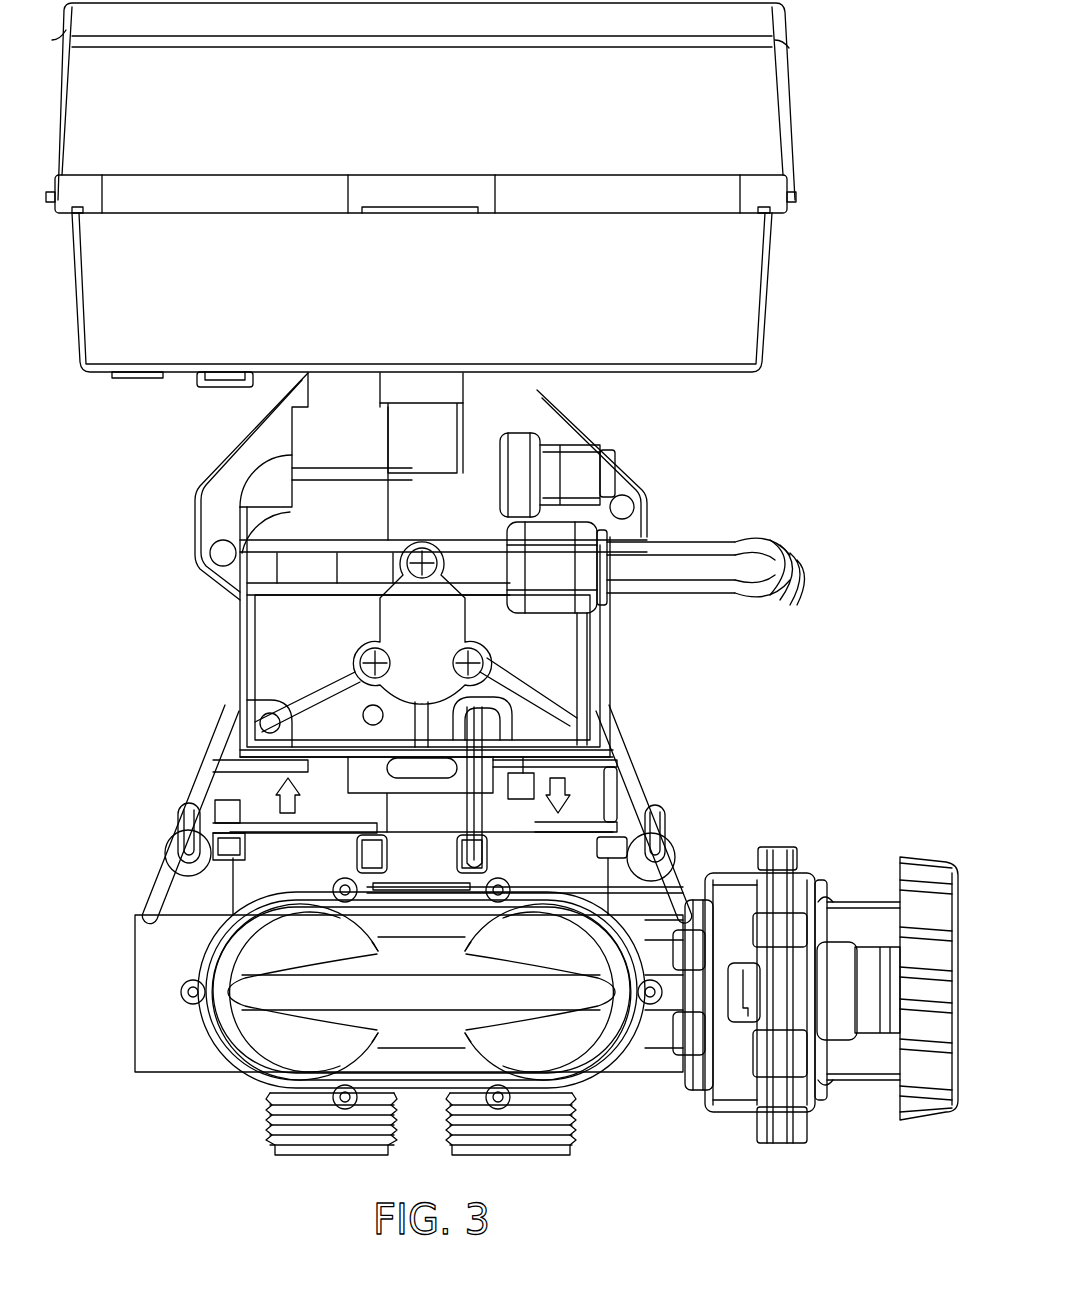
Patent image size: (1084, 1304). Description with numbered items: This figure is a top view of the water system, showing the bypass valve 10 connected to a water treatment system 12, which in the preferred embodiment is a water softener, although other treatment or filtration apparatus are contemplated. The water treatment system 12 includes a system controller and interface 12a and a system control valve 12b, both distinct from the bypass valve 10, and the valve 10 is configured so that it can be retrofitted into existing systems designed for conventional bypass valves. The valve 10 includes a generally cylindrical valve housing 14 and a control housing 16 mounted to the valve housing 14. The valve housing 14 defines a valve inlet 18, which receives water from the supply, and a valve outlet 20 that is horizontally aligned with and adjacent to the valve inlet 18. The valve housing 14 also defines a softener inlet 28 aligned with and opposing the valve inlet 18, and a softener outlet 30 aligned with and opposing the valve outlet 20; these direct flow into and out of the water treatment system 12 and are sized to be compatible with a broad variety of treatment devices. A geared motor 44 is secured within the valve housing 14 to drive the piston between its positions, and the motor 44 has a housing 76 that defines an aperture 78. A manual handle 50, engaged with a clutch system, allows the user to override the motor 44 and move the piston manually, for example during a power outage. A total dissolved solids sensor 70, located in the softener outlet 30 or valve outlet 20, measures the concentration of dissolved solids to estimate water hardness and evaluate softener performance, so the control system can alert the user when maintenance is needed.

The valve 10 is at (118, 802).
The water treatment system 12 is at (660, 458).
The system controller and interface 12a is at (770, 118).
The system control valve 12b is at (550, 645).
The valve housing 14 is at (162, 1028).
The control housing 16 is at (265, 947).
The valve inlet 18 is at (267, 1135).
The valve outlet 20 is at (577, 1135).
The softener inlet 28 is at (270, 870).
The softener outlet 30 is at (552, 872).
The motor 44 is at (727, 1098).
The manual handle 50 is at (928, 855).
The total dissolved solids (TDS) sensor 70 is at (535, 775).
The housing 76 is at (742, 883).
The aperture 78 is at (740, 1020).